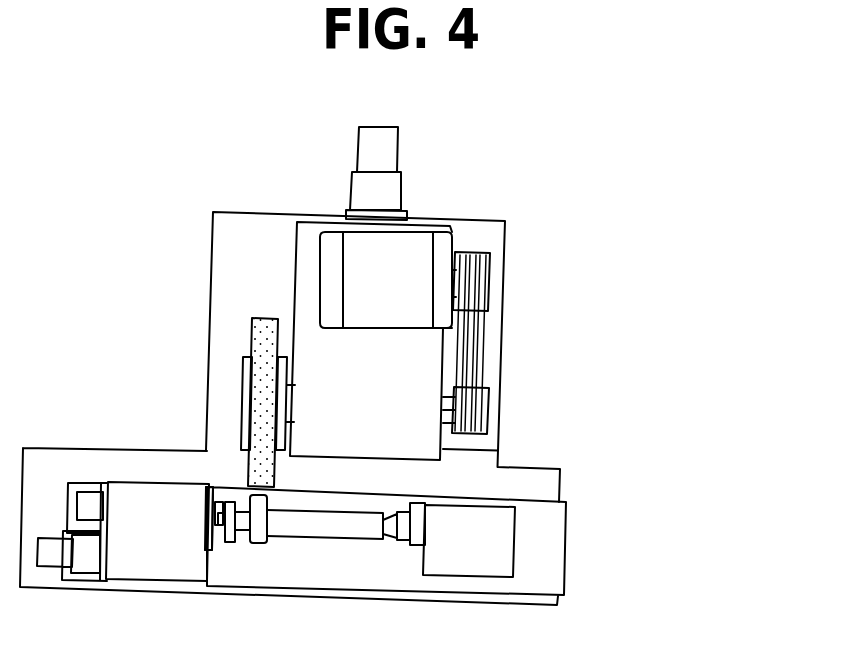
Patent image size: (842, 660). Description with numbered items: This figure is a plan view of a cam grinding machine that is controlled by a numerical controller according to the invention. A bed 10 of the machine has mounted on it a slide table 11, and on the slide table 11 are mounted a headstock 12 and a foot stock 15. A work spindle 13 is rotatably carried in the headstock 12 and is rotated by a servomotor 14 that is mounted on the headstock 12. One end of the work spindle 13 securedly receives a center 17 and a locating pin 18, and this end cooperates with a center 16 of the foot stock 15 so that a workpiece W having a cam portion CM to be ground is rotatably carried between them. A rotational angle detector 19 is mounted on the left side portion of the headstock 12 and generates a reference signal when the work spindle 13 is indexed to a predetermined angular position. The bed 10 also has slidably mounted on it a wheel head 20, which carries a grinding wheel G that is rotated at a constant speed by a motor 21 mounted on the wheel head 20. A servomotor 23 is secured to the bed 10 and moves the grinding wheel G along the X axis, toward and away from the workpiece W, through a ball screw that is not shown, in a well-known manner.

The bed 10 is at (552, 481).
The slide table 11 is at (560, 555).
The headstock 12 is at (150, 486).
The work spindle 13 is at (208, 550).
The servomotor 14 is at (53, 566).
The foot stock 15 is at (467, 577).
The center 16 is at (387, 541).
The center 17 is at (226, 542).
The locating pin 18 is at (221, 487).
The rotational angle detector 19 is at (90, 497).
The wheel head 20 is at (497, 450).
The motor 21 is at (418, 245).
The servomotor 23 is at (392, 157).
The grinding wheel G is at (257, 393).
The workpiece W is at (328, 541).
The cam portion CM is at (254, 543).
The X axis X is at (513, 288).